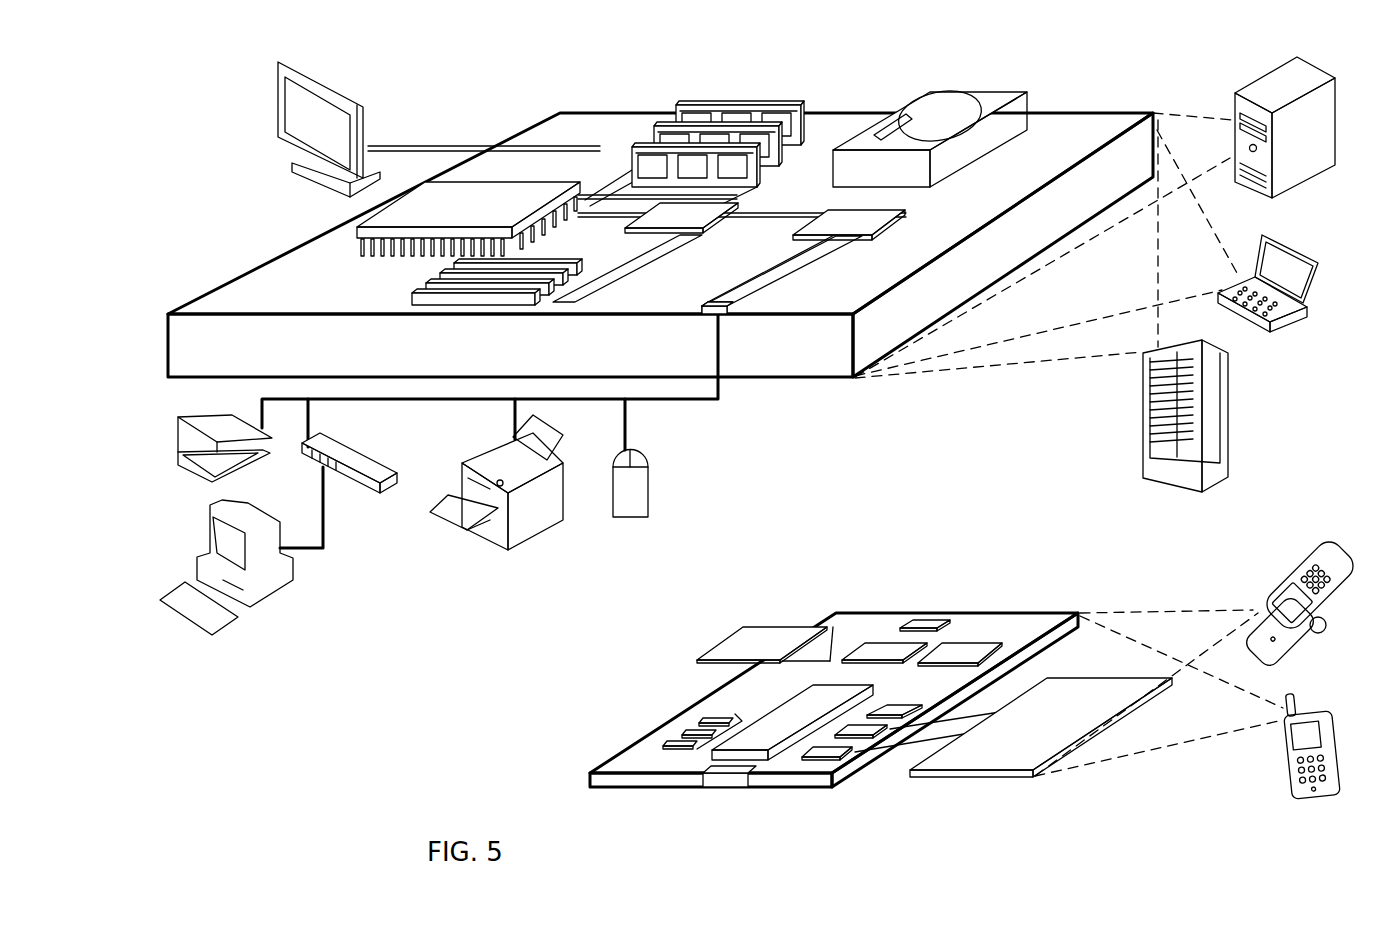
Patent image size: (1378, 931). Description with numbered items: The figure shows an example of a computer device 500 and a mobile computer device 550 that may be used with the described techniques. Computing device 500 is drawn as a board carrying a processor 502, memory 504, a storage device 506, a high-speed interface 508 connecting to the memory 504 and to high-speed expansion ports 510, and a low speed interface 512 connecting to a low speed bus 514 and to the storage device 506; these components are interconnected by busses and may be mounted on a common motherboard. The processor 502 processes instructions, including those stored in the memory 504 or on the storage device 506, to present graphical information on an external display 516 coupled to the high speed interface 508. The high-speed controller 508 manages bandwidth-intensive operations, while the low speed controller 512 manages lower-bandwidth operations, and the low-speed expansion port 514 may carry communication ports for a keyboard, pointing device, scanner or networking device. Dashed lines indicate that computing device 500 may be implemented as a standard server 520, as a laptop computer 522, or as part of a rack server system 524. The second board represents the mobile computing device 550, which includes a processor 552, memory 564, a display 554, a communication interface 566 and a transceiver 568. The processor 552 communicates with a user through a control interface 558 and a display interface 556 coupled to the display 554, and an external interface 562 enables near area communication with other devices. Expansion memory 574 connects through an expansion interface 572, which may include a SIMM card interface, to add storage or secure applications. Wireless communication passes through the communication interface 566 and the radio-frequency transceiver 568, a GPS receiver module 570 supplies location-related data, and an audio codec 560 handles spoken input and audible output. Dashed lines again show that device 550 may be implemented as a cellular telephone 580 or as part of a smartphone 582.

The computing device 500 is at (486, 85).
The processor 502 is at (357, 229).
The memory 504 is at (693, 103).
The storage device 506 is at (923, 97).
The high-speed interface 508 is at (657, 213).
The high-speed expansion ports 510 is at (418, 280).
The low speed interface 512 is at (847, 222).
The low speed bus 514 is at (730, 316).
The display 516 is at (278, 64).
The standard server 520 is at (1233, 98).
The laptop computer 522 is at (1260, 237).
The rack server system 524 is at (1142, 438).
The mobile computing device 550 is at (813, 588).
The processor 552 is at (772, 762).
The display 554 is at (1037, 777).
The display interface 556 is at (840, 758).
The control interface 558 is at (877, 736).
The audio codec 560 is at (893, 713).
The external interface 562 is at (732, 779).
The memory 564 is at (677, 733).
The communication interface 566 is at (883, 650).
The transceiver 568 is at (960, 653).
The GPS receiver module 570 is at (928, 627).
The expansion interface 572 is at (807, 625).
The expansion memory 574 is at (740, 627).
The cellular telephone 580 is at (1312, 553).
The smartphone 582 is at (1290, 690).